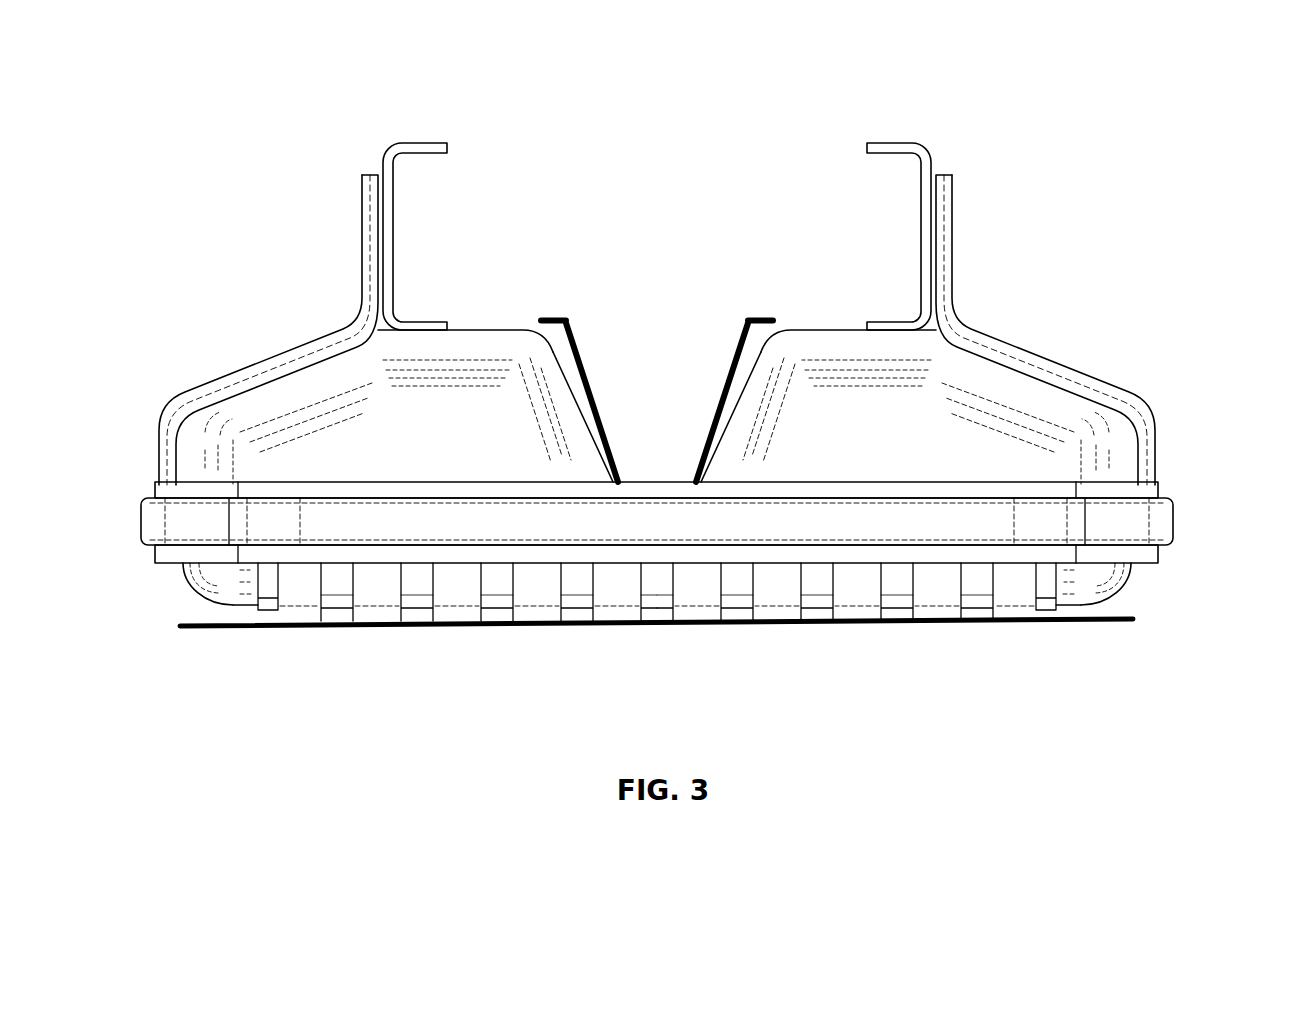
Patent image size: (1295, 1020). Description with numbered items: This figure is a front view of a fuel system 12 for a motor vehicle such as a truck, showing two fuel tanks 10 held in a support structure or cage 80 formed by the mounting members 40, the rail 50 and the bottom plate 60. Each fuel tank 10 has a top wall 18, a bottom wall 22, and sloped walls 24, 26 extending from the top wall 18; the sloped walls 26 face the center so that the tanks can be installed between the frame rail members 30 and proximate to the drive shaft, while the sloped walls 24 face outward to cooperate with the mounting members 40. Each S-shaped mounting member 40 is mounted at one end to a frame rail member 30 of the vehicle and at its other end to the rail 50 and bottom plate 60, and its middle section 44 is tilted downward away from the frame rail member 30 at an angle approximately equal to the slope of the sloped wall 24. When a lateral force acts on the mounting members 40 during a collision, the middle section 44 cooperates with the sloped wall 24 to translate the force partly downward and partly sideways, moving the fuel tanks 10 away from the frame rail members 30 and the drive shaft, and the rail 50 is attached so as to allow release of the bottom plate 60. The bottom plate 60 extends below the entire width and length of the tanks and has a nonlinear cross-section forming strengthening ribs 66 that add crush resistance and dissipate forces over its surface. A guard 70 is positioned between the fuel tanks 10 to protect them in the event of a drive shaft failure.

The fuel tank 10 is at (214, 396).
The fuel system 12 is at (693, 391).
The top wall 18 is at (483, 325).
The bottom wall 22 is at (233, 608).
The sloped wall 24 is at (307, 358).
The sloped wall 26 is at (590, 413).
The frame rail member 30 is at (423, 142).
The mounting member 40 is at (679, 314).
The middle section 44 is at (254, 356).
The rail 50 is at (1188, 494).
The bottom plate 60 is at (1104, 637).
The strengthening ribs 66 is at (308, 617).
The guard 70 is at (591, 348).
The support structure or cage 80 is at (679, 262).